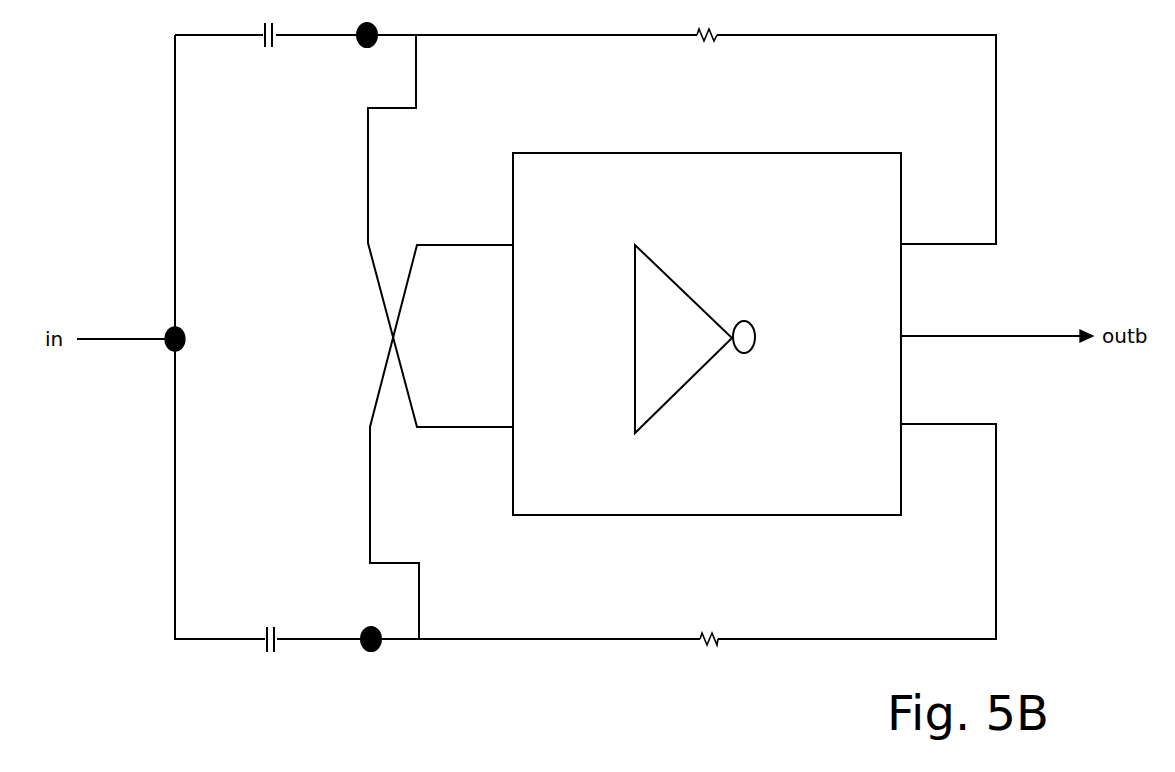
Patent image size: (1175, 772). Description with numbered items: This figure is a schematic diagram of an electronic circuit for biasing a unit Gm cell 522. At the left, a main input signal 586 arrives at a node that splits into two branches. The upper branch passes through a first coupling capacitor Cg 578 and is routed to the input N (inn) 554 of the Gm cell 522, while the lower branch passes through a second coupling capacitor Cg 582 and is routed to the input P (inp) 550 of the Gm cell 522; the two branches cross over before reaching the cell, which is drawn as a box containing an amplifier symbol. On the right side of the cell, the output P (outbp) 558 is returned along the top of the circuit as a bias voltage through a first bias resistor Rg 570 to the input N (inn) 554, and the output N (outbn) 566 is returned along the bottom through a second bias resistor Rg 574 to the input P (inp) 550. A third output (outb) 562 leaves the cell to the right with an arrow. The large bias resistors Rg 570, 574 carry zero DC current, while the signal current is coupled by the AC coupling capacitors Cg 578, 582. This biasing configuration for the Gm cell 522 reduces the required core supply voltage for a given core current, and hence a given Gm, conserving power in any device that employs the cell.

The unit Gm cell 522 is at (845, 517).
The input P (inp) 550 is at (496, 246).
The input N (inn) 554 is at (472, 428).
The output P (outbp) 558 is at (987, 244).
The output (outb) 562 is at (987, 337).
The output N (outbn) 566 is at (987, 425).
The first bias resistor Rg 570 is at (719, 38).
The second bias resistor Rg 574 is at (718, 642).
The first coupling capacitor Cg 578 is at (274, 72).
The second coupling capacitor Cg 582 is at (276, 653).
The main input signal 586 is at (143, 340).